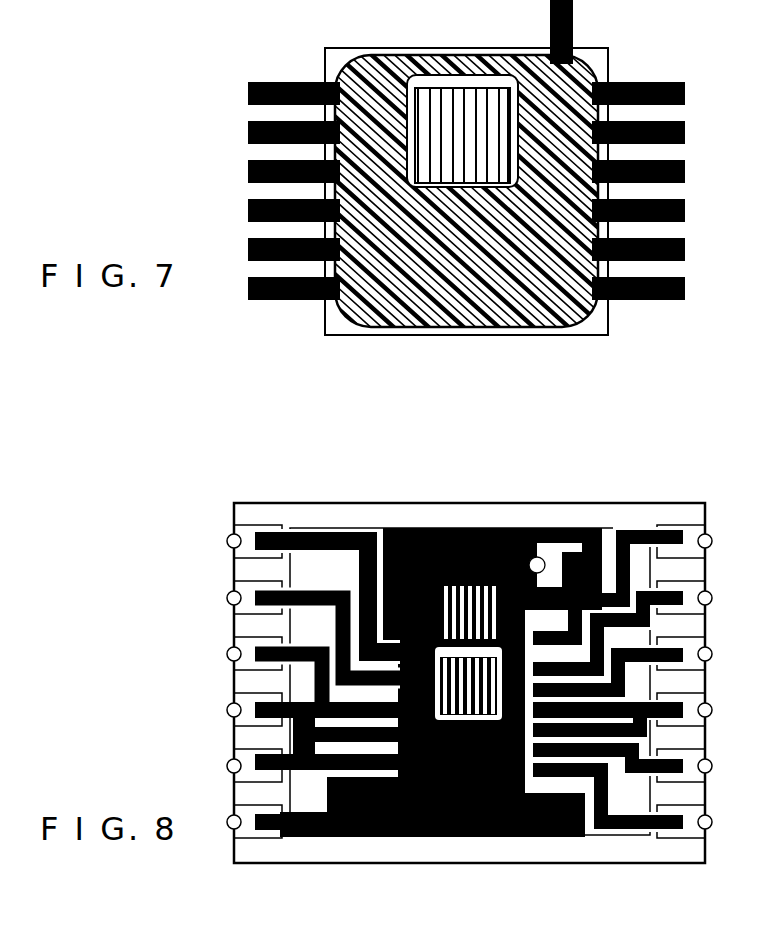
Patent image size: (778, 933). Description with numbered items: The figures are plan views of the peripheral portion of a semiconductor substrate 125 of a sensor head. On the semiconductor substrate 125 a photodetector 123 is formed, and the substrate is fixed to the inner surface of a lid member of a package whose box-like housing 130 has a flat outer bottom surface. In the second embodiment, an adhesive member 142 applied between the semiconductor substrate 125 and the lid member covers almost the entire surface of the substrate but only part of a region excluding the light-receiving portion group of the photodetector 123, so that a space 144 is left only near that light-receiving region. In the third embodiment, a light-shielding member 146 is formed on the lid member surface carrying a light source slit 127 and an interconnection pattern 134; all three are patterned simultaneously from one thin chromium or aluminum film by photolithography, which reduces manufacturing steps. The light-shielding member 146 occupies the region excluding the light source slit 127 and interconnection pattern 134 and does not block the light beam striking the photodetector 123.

In FIG. 7, the photodetector 123 is at (455, 95).
In FIG. 8, the photodetector 123 is at (447, 716).
In FIG. 7, the semiconductor substrate 125 is at (590, 330).
In FIG. 8, the semiconductor substrate 125 is at (533, 790).
In FIG. 8, the light source slit 127 is at (447, 592).
In FIG. 8, the housing 130 is at (234, 514).
In FIG. 7, the interconnection pattern 134 is at (656, 82).
In FIG. 8, the interconnection pattern 134 is at (568, 556).
In FIG. 7, the adhesive member 142 is at (382, 323).
In FIG. 7, the space 144 is at (462, 190).
In FIG. 8, the light-shielding member 146 is at (368, 837).